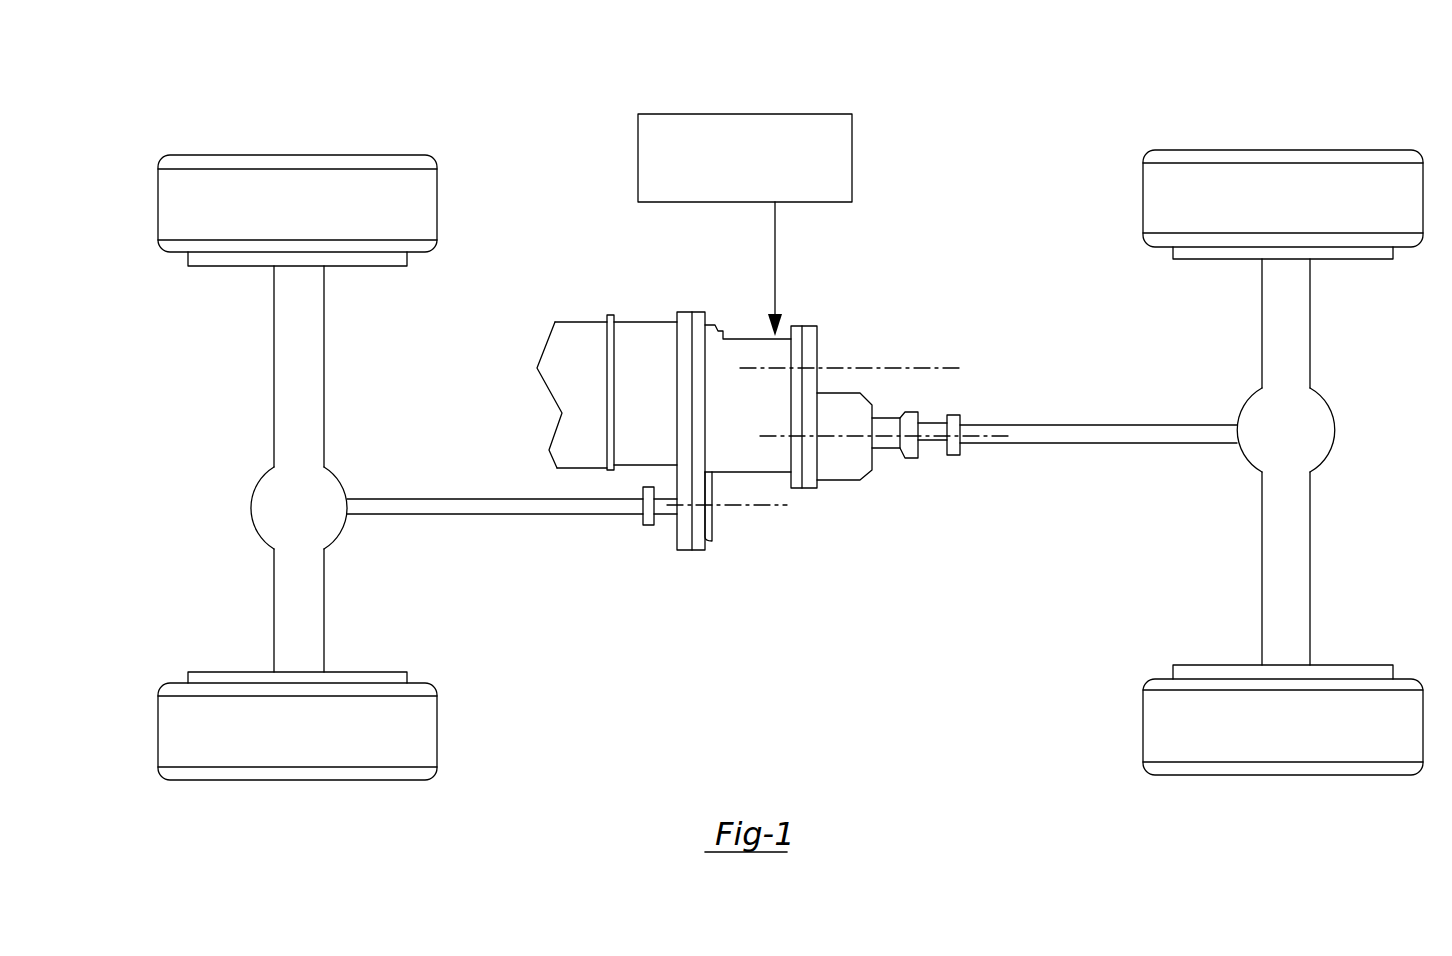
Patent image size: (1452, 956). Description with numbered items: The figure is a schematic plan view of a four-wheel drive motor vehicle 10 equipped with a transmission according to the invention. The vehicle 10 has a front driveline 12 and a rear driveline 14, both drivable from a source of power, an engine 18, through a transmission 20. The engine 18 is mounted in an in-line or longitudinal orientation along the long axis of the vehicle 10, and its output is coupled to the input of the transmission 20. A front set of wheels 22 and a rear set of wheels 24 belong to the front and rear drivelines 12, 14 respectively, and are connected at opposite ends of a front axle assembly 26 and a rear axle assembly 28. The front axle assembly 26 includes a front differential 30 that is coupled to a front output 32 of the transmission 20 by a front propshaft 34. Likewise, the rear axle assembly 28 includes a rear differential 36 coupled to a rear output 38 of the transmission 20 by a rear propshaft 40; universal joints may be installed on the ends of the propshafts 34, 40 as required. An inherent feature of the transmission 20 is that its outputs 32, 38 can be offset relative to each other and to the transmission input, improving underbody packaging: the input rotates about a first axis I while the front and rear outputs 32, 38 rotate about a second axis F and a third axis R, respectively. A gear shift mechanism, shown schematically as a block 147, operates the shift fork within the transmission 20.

The motor vehicle 10 is at (978, 154).
The front driveline 12 is at (350, 424).
The rear driveline 14 is at (1224, 440).
The engine 18 is at (565, 432).
The transmission 20 is at (650, 330).
The front set of wheels 22 is at (217, 193).
The rear set of wheels 24 is at (1200, 190).
The front axle assembly 26 is at (280, 357).
The rear axle assembly 28 is at (1300, 321).
The front differential 30 is at (262, 518).
The front output 32 is at (660, 513).
The front propshaft 34 is at (518, 512).
The rear differential 36 is at (1312, 422).
The rear output 38 is at (928, 428).
The rear propshaft 40 is at (1148, 432).
The gear shift mechanism 147 is at (852, 118).